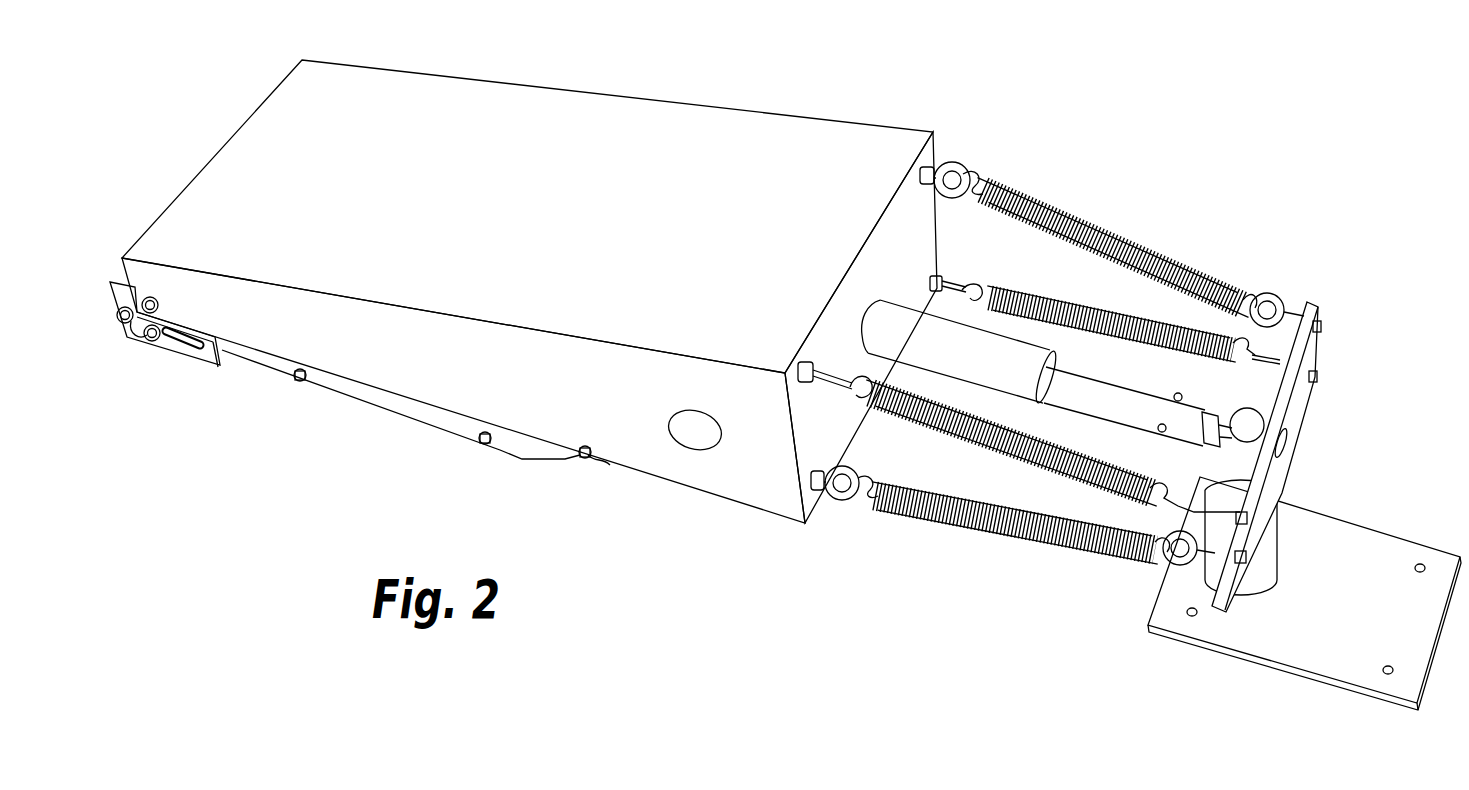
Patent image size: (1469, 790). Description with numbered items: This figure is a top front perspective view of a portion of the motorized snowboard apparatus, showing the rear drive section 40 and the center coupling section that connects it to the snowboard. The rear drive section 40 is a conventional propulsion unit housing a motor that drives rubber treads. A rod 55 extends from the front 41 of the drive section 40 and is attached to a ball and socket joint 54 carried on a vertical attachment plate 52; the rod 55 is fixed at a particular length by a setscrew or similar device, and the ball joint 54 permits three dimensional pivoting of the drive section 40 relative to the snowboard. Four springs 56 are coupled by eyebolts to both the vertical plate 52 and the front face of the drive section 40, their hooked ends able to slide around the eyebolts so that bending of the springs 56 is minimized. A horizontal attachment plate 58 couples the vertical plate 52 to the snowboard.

The rear drive section 40 is at (620, 163).
The front 41 is at (913, 200).
The vertical attachment plate 52 is at (1287, 420).
The ball and socket joint 54 is at (1105, 291).
The rod 55 is at (906, 316).
The springs 56 is at (1040, 448).
The horizontal attachment plate 58 is at (1367, 557).